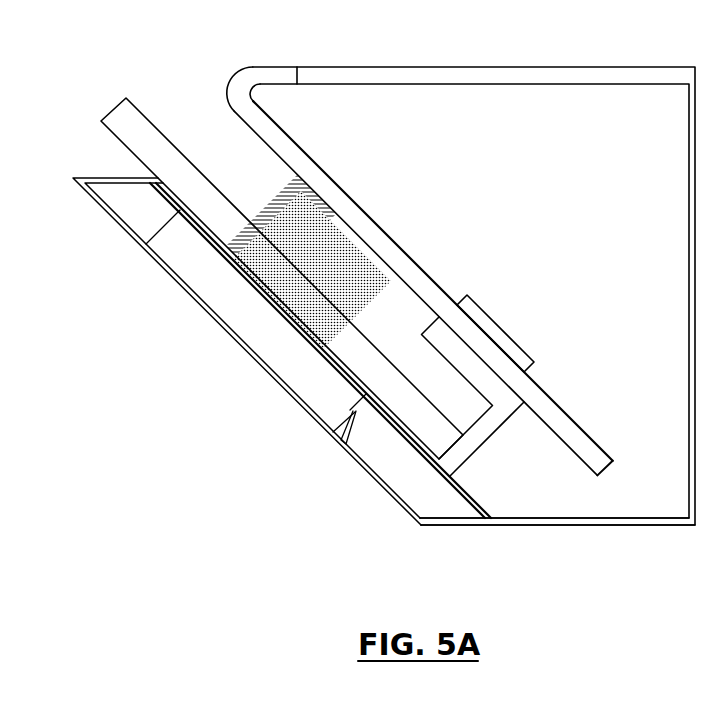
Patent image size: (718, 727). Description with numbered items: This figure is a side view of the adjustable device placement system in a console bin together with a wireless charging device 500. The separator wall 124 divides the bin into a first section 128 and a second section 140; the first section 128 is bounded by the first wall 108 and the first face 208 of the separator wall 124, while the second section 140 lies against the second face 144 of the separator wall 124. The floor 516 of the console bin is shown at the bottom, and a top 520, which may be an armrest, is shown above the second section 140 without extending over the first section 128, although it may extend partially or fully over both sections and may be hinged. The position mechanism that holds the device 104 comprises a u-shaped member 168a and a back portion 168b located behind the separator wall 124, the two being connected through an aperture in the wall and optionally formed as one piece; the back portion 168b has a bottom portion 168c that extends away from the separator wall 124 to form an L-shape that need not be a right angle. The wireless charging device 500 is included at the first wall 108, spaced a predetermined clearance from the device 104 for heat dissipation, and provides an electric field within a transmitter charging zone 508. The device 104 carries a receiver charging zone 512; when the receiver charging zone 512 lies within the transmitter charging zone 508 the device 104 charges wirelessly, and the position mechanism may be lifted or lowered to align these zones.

The device 104 is at (125, 97).
The first wall 108 is at (298, 399).
The separator wall 124 is at (288, 152).
The first section 128 is at (176, 63).
The second section 140 is at (461, 288).
The second face 144 is at (595, 441).
The u-shaped member 168a is at (480, 306).
The back portion 168b is at (478, 378).
The bottom portion 168c is at (478, 450).
The first face 208 is at (557, 441).
The wireless charging device 500 is at (282, 351).
The transmitter charging zone 508 is at (350, 250).
The receiver charging zone 512 is at (320, 202).
The floor 516 is at (608, 527).
The top 520 is at (380, 66).